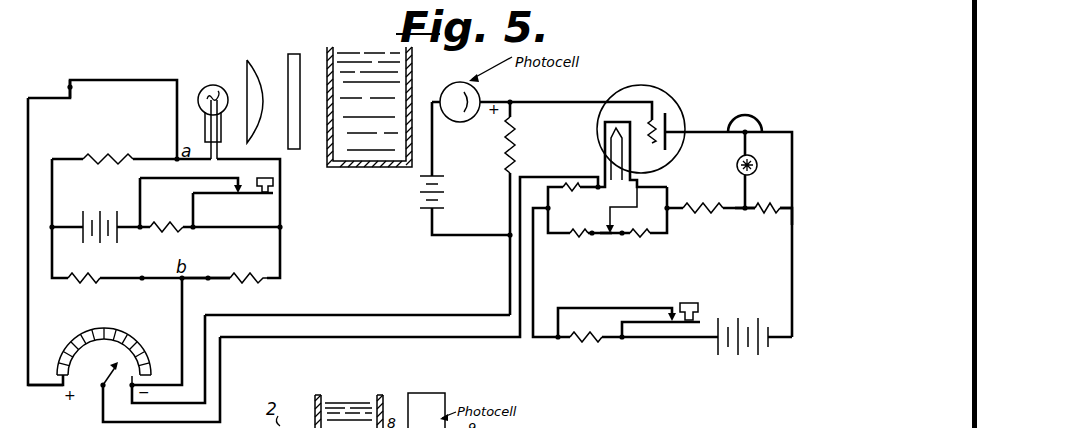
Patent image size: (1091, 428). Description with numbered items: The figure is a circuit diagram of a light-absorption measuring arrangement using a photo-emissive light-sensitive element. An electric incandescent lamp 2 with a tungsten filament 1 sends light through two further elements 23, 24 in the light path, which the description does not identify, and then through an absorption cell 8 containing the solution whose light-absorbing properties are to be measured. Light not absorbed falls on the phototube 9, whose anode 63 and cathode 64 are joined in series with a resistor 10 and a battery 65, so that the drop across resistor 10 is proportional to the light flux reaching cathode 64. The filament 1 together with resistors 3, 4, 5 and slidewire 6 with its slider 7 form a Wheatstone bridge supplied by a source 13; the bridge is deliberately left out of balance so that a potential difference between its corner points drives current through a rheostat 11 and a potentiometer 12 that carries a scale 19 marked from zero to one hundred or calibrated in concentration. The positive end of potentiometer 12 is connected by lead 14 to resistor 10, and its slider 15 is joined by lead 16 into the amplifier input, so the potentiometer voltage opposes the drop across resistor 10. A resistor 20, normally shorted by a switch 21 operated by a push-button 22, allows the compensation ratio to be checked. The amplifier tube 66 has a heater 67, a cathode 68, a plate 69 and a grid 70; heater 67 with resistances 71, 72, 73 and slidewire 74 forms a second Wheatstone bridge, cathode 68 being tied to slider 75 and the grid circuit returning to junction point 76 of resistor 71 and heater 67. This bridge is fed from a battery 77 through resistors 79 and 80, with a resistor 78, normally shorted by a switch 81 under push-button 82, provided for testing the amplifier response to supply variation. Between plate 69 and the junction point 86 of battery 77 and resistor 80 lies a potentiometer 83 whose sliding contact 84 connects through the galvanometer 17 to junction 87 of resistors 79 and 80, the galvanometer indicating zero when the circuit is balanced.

The filament 1 is at (203, 108).
The electric incandescent lamp 2 is at (204, 97).
The resistor 3 is at (120, 154).
The resistor 4 is at (96, 273).
The resistor 5 is at (246, 275).
The slidewire 6 is at (202, 274).
The slider 7 is at (182, 280).
The absorption cell 8 is at (368, 167).
The phototube 9 is at (453, 122).
The resistor 10 is at (516, 146).
The rheostat 11 is at (53, 80).
The potentiometer 12 is at (92, 382).
The source 13 is at (88, 208).
The lead 14 is at (338, 314).
The slider 15 is at (110, 387).
The lead 16 is at (304, 338).
The galvanometer 17 is at (738, 168).
The scale 19 is at (82, 335).
The resistor 20 is at (156, 232).
The switch 21 is at (231, 187).
The push-button 22 is at (273, 182).
The lens 23 is at (253, 68).
The slit plate 24 is at (294, 60).
The anode 63 is at (447, 87).
The cathode 64 is at (472, 92).
The battery 65 is at (443, 201).
The amplifier tube 66 is at (645, 84).
The heater 67 is at (603, 124).
The cathode 68 is at (616, 117).
The anode or plate 69 is at (669, 118).
The control element or grid 70 is at (660, 112).
The resistance 71 is at (569, 193).
The resistance 72 is at (574, 236).
The resistance 73 is at (653, 237).
The slidewire 74 is at (605, 235).
The slider 75 is at (622, 216).
The junction point 76 is at (597, 193).
The battery 77 is at (761, 351).
The resistor 78 is at (594, 344).
The resistor 79 is at (716, 207).
The resistor 80 is at (771, 206).
The switch 81 is at (672, 305).
The push-button 82 is at (699, 301).
The potentiometer 83 is at (753, 117).
The sliding contact 84 is at (748, 132).
The junction point 86 is at (790, 212).
The junction 87 is at (743, 214).